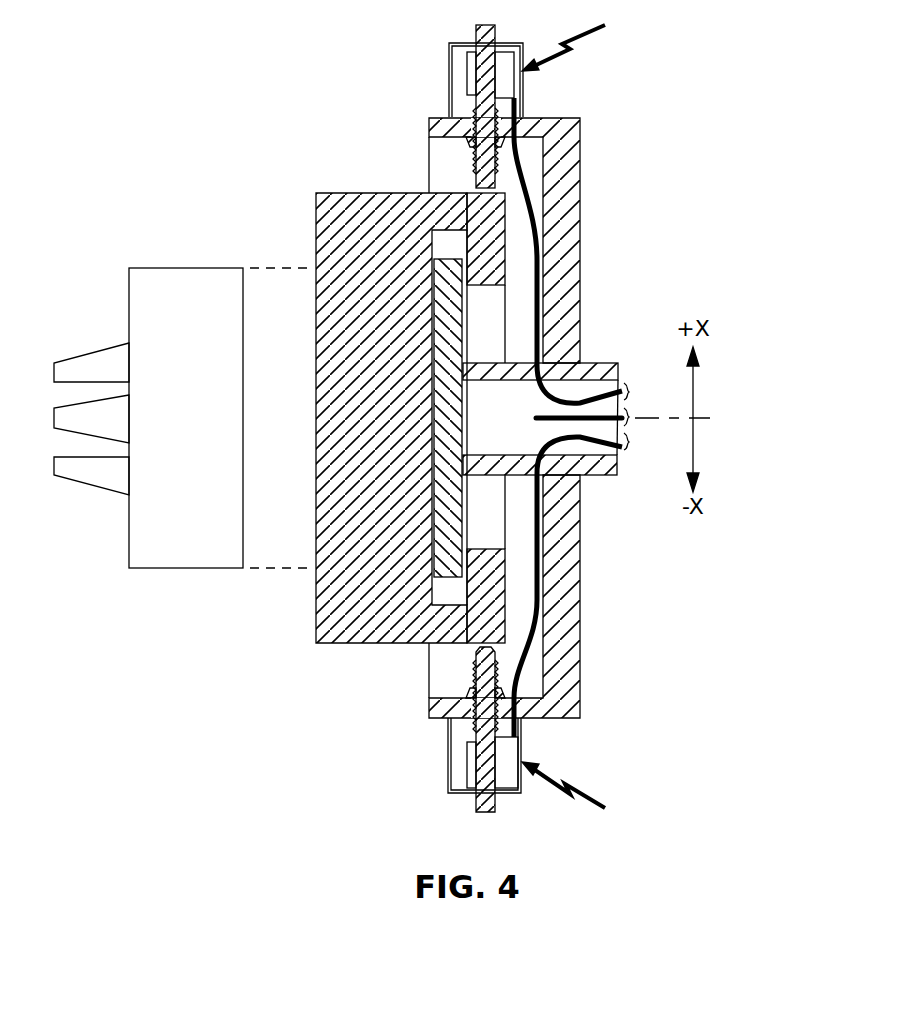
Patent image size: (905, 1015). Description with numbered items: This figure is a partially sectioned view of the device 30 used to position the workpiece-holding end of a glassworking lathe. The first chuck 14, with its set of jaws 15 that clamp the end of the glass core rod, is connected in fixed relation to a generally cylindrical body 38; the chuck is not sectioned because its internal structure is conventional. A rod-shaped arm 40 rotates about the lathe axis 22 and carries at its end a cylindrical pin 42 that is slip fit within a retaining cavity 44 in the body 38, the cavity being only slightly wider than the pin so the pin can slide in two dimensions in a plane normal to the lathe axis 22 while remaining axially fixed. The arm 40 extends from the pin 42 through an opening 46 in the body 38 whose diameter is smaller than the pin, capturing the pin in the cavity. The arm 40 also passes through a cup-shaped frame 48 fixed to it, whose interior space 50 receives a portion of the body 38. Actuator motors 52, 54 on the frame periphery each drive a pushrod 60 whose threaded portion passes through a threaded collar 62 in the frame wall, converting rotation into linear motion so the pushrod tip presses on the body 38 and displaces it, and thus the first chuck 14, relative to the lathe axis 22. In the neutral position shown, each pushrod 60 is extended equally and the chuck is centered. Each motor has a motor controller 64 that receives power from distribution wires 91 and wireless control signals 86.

The device 30 is at (168, 102).
The first chuck 14 is at (183, 268).
The jaws 15 is at (84, 357).
The lathe axis 22 is at (660, 421).
The body 38 is at (345, 645).
The arm 40 is at (600, 477).
The pin 42 is at (434, 280).
The retaining cavity 44 is at (435, 604).
The opening 46 is at (505, 296).
The frame 48 is at (580, 203).
The interior space 50 is at (507, 269).
The actuator motor 52 is at (449, 72).
The actuator motor 54 is at (448, 772).
The pushrod 60 is at (476, 163).
The threaded collar 62 is at (468, 143).
The motor controller 64 is at (522, 85).
The control signals 86 is at (586, 42).
The distribution wires 91 is at (540, 333).